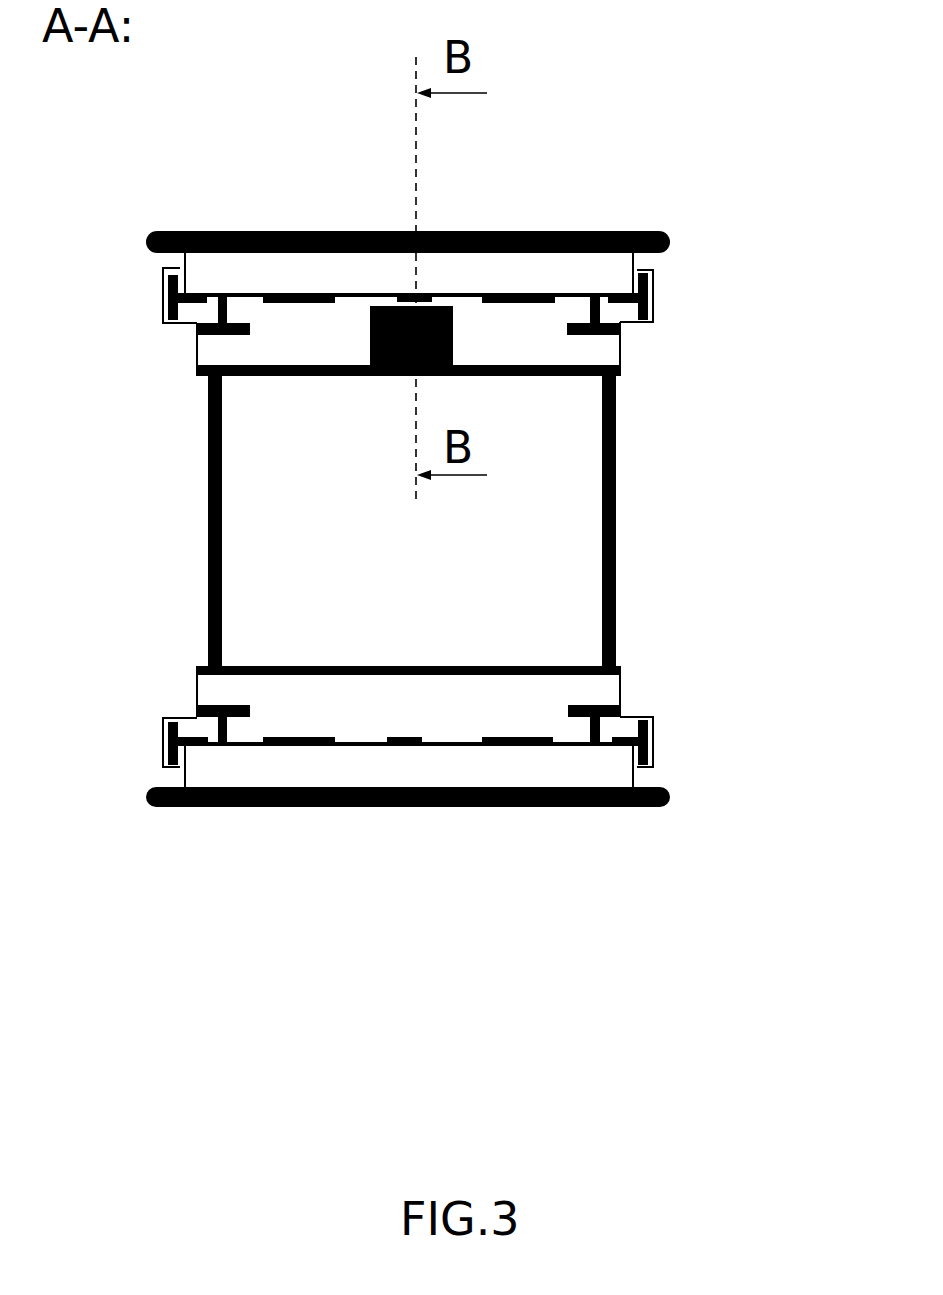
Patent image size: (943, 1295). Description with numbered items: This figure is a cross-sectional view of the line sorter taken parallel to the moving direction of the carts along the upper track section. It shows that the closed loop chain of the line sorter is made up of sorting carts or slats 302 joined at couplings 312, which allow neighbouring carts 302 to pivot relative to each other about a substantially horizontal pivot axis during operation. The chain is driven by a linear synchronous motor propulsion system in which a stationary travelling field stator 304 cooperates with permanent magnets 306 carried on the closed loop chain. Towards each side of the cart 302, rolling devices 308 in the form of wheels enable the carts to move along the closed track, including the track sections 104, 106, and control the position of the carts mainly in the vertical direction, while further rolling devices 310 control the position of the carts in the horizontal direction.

The sorting cart 302 is at (230, 180).
The stationary travelling field stator 304 is at (370, 340).
The permanent magnet 306 is at (420, 295).
The rolling device 308 is at (168, 283).
The rolling device 310 is at (206, 333).
The coupling 312 is at (298, 295).
The track section 104 is at (656, 347).
The track section 106 is at (670, 684).